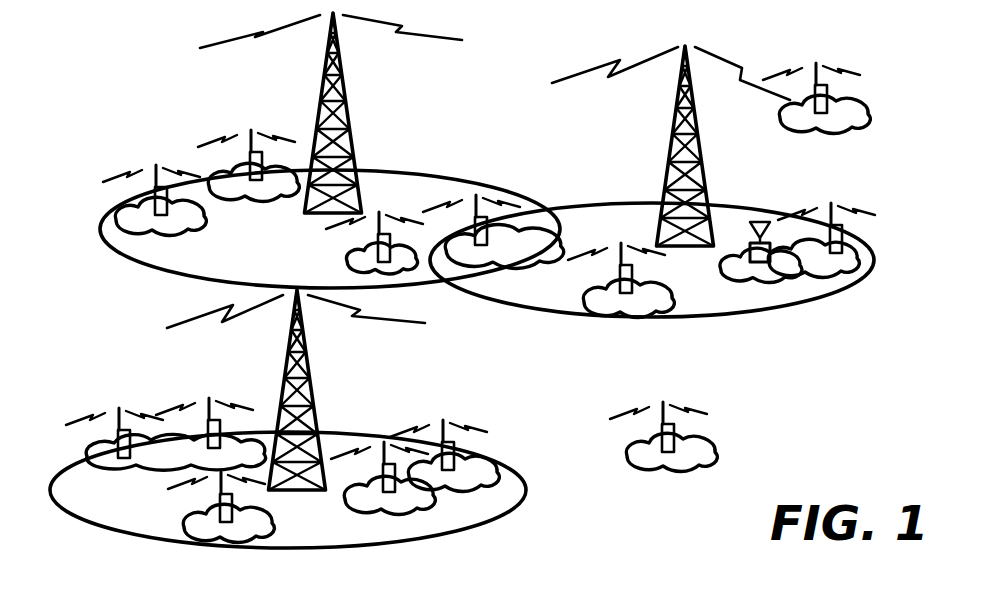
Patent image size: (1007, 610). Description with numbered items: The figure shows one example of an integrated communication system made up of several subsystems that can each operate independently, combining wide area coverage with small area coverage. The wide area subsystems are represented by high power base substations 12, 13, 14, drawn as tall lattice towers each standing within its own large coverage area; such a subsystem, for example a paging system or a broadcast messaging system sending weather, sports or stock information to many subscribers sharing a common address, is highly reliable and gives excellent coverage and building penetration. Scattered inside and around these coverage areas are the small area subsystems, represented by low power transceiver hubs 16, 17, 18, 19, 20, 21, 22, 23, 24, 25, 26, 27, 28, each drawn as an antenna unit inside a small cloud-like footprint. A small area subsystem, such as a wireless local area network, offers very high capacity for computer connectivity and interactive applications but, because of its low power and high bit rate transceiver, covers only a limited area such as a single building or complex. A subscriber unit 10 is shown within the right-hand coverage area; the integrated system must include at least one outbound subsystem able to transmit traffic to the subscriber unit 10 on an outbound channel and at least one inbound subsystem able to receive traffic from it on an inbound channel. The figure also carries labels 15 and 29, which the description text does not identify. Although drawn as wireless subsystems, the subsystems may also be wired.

The subscriber unit 10 is at (803, 260).
The high power base substation 12 is at (343, 112).
The high power base substation 13 is at (670, 137).
The high power base substation 14 is at (310, 379).
The cell coverage area 15 is at (742, 203).
The low power transceiver hub 16 is at (702, 464).
The low power transceiver hub 17 is at (855, 256).
The low power transceiver hub 18 is at (651, 300).
The low power transceiver hub 19 is at (490, 236).
The low power transceiver hub 20 is at (430, 268).
The low power transceiver hub 21 is at (248, 183).
The low power transceiver hub 22 is at (143, 201).
The low power transceiver hub 23 is at (100, 442).
The low power transceiver hub 24 is at (223, 430).
The low power transceiver hub 25 is at (233, 515).
The low power transceiver hub 26 is at (473, 458).
The low power transceiver hub 27 is at (420, 490).
The low power transceiver hub 28 is at (853, 130).
The mobile unit 29 is at (778, 283).